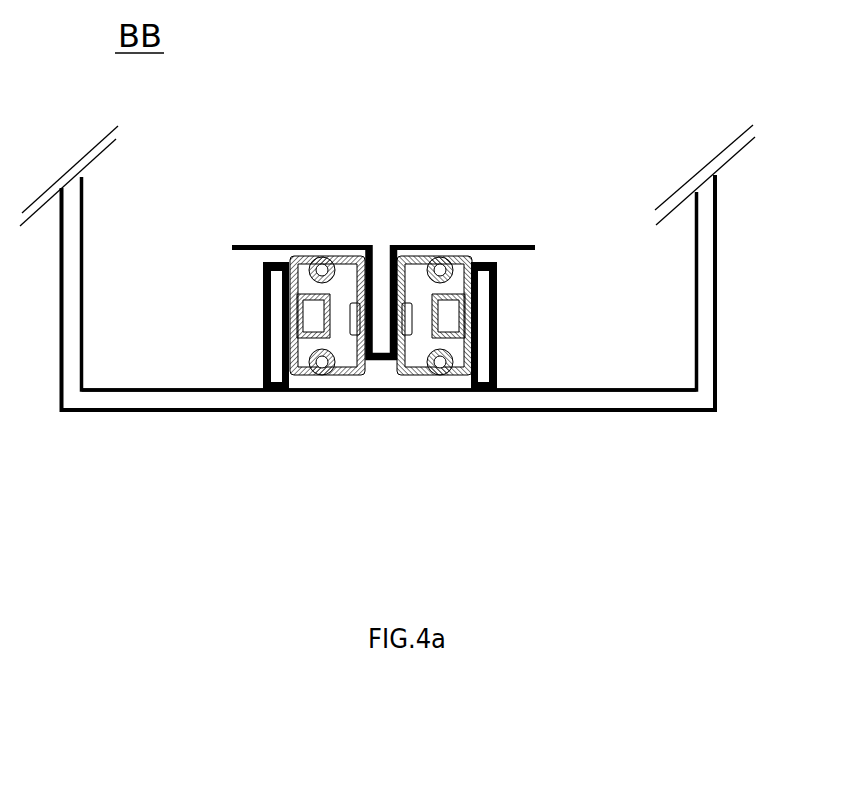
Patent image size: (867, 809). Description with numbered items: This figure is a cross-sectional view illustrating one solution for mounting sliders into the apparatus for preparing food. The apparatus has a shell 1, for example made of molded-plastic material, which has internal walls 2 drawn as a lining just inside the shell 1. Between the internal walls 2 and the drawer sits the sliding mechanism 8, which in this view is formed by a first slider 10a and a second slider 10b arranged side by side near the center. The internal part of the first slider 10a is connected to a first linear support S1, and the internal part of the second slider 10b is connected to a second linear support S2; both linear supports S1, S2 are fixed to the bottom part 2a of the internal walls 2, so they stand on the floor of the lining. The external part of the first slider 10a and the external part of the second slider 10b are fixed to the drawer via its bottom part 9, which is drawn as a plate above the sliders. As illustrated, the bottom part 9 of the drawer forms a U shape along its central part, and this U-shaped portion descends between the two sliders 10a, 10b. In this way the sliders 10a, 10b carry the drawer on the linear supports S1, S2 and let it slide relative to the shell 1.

The shell 1 is at (715, 340).
The internal walls 2 is at (84, 201).
The bottom part of the internal walls 2a is at (113, 389).
The sliding mechanism 8 is at (398, 223).
The bottom part of the drawer 9 is at (512, 245).
The first linear support S1 is at (263, 283).
The second linear support S2 is at (498, 283).
The first slider 10a is at (347, 376).
The second slider 10b is at (420, 376).